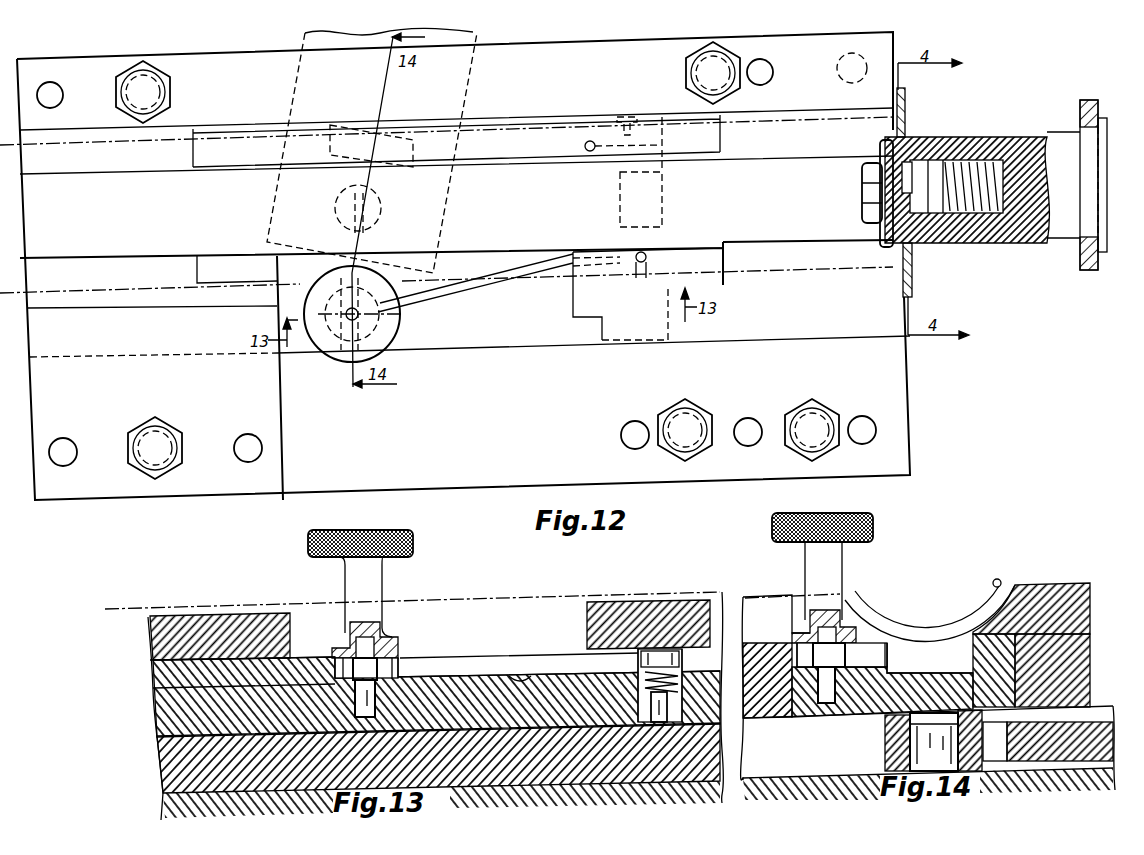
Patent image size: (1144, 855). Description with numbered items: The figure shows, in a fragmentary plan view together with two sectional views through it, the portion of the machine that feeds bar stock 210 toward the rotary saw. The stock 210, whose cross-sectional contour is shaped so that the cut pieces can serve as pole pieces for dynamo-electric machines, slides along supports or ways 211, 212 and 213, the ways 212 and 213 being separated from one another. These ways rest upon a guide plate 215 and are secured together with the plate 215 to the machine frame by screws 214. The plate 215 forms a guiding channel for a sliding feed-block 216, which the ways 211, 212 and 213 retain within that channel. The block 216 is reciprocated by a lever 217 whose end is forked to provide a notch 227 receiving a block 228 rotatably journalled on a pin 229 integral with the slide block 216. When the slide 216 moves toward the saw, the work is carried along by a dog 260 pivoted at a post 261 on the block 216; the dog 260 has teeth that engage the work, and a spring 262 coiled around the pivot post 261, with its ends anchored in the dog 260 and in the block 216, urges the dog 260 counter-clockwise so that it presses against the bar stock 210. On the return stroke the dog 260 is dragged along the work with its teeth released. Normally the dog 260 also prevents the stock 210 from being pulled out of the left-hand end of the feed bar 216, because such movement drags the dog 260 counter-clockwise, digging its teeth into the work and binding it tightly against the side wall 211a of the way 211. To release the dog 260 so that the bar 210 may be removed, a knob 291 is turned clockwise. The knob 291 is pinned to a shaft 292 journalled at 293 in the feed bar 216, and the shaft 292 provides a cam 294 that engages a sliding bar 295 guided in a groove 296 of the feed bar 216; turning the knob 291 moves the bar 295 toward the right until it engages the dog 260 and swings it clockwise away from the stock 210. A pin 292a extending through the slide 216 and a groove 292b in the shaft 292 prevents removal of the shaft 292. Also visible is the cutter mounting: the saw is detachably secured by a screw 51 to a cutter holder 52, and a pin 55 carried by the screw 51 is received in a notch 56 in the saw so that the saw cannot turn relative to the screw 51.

In FIG. 12, the way 211 is at (583, 55).
In FIG. 14, the way 211 is at (1035, 597).
In FIG. 12, the side wall of way 211a is at (758, 153).
In FIG. 14, the side wall of way 211a is at (998, 586).
In FIG. 12, the way 212 is at (40, 283).
In FIG. 13, the way 212 is at (289, 628).
In FIG. 14, the way 212 is at (770, 607).
In FIG. 12, the way 213 is at (880, 358).
In FIG. 13, the way 213 is at (593, 627).
In FIG. 12, the screws 214 is at (712, 60).
In FIG. 12, the guide plate 215 is at (476, 470).
In FIG. 13, the guide plate 215 is at (190, 765).
In FIG. 14, the guide plate 215 is at (747, 733).
In FIG. 12, the sliding feed-block 216 is at (526, 345).
In FIG. 13, the sliding feed-block 216 is at (163, 703).
In FIG. 14, the sliding feed-block 216 is at (860, 703).
In FIG. 12, the lever 217 is at (467, 37).
In FIG. 14, the lever 217 is at (885, 750).
In FIG. 12, the notch 227 is at (332, 143).
In FIG. 12, the block 228 is at (393, 212).
In FIG. 12, the pin 229 is at (363, 208).
In FIG. 12, the dog 260 is at (657, 258).
In FIG. 13, the dog 260 is at (653, 653).
In FIG. 12, the pivot post 261 is at (640, 283).
In FIG. 13, the pivot post 261 is at (668, 698).
In FIG. 13, the spring 262 is at (673, 680).
In FIG. 12, the knob 291 is at (399, 319).
In FIG. 13, the knob 291 is at (412, 542).
In FIG. 14, the knob 291 is at (866, 528).
In FIG. 13, the shaft 292 is at (380, 635).
In FIG. 14, the shaft 292 is at (827, 613).
In FIG. 13, the pin 292a is at (338, 672).
In FIG. 13, the groove 292b is at (382, 667).
In FIG. 13, the journal 293 is at (372, 700).
In FIG. 12, the cam 294 is at (330, 307).
In FIG. 13, the cam 294 is at (343, 643).
In FIG. 14, the cam 294 is at (845, 640).
In FIG. 12, the sliding bar 295 is at (492, 291).
In FIG. 13, the sliding bar 295 is at (495, 660).
In FIG. 13, the groove 296 is at (517, 680).
In FIG. 14, the groove 296 is at (805, 657).
In FIG. 14, the bar stock 210 is at (903, 625).
In FIG. 12, the screw 51 is at (868, 193).
In FIG. 12, the cutter holder 52 is at (987, 140).
In FIG. 12, the pin 55 is at (910, 155).
In FIG. 12, the notch 56 is at (905, 143).